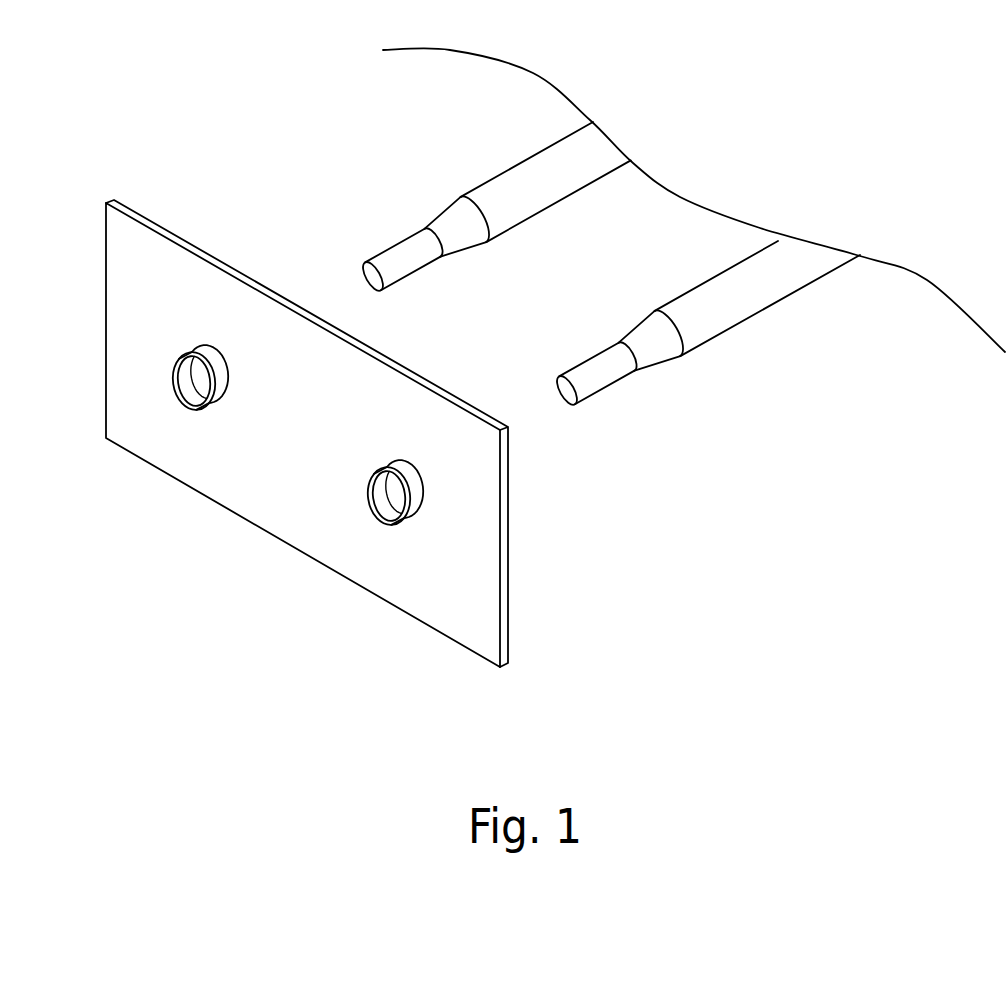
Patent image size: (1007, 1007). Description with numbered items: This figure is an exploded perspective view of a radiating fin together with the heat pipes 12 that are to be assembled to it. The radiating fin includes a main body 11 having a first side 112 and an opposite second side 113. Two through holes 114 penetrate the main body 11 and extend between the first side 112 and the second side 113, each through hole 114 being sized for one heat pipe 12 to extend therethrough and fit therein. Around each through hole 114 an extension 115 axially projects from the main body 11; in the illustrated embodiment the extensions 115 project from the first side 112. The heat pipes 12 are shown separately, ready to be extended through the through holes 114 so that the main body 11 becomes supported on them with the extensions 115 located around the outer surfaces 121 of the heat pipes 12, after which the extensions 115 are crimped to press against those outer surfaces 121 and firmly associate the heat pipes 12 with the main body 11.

The main body 11 is at (367, 400).
The heat pipe 12 is at (682, 227).
The first side 112 is at (472, 627).
The second side 113 is at (507, 585).
The through hole 114 is at (397, 493).
The extension 115 is at (420, 494).
The outer surface 121 is at (705, 297).